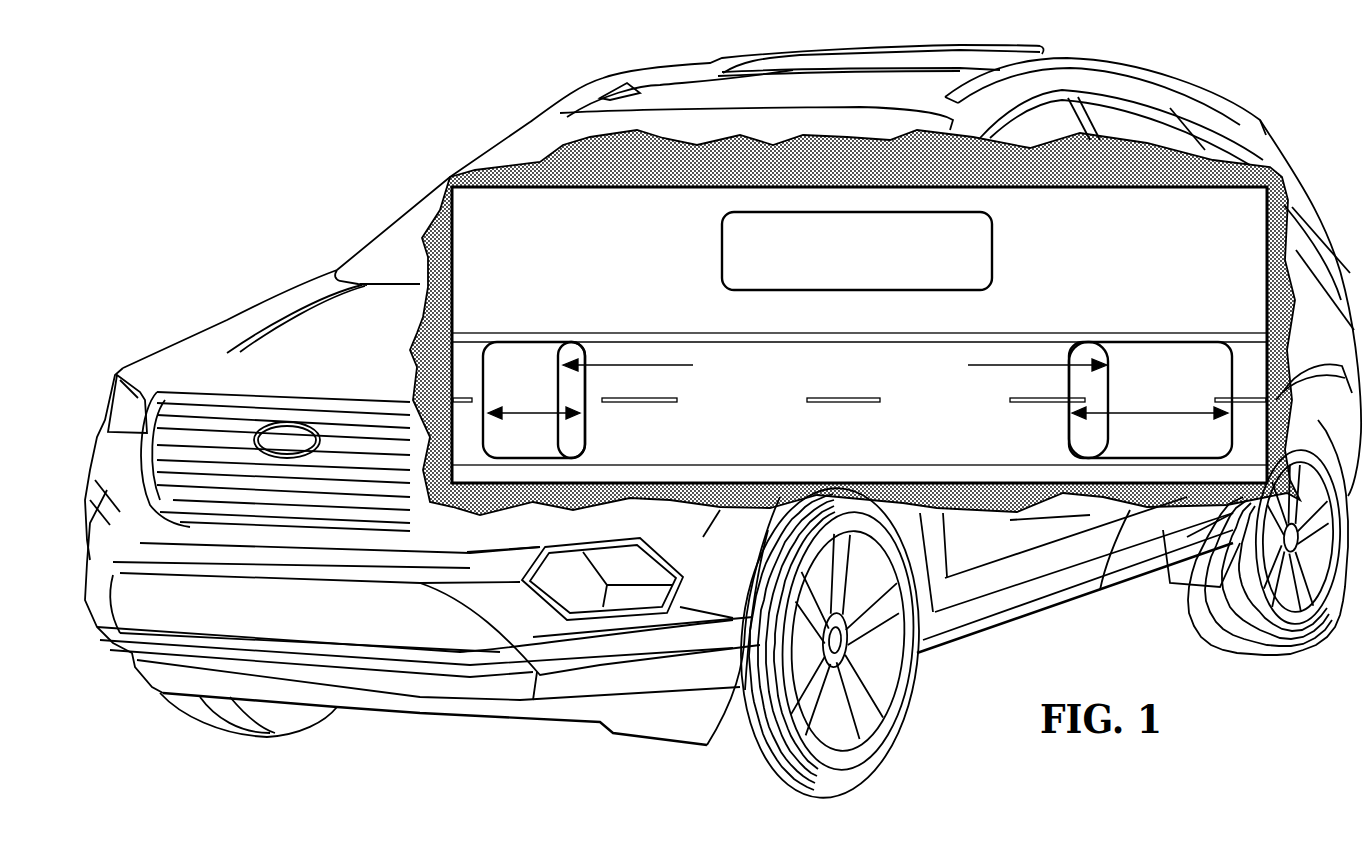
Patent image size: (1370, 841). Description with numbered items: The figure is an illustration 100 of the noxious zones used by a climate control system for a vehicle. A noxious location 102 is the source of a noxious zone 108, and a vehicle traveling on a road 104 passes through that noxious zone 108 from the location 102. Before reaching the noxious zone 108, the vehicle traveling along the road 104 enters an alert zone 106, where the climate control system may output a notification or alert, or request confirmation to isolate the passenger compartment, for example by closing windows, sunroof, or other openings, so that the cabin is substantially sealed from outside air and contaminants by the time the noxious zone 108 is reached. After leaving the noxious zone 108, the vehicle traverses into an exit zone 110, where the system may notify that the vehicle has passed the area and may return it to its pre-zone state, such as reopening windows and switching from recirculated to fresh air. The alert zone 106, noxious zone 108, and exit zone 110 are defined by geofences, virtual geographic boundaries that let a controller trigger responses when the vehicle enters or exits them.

The illustration 100 is at (1218, 226).
The noxious location 102 is at (994, 260).
The road 104 is at (1168, 333).
The alert zone 106 is at (1141, 342).
The noxious zone 108 is at (685, 342).
The exit zone 110 is at (540, 342).